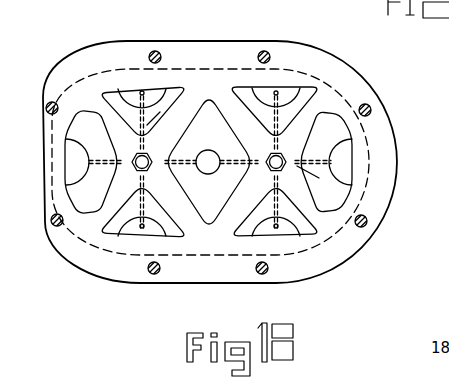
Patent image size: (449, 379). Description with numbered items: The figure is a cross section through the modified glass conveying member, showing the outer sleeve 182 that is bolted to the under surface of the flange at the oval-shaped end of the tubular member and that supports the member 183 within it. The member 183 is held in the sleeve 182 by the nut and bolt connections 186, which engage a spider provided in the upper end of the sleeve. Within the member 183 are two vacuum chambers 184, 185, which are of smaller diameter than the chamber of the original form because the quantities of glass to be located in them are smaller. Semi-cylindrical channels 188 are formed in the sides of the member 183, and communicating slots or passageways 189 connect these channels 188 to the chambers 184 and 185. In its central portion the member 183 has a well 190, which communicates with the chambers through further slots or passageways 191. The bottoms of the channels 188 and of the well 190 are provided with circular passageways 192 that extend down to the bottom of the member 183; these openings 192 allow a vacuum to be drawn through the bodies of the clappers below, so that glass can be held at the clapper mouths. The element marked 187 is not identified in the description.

The outer sleeve 182 is at (236, 272).
The member 183 is at (327, 130).
The vacuum chamber 184 is at (357, 197).
The vacuum chamber 185 is at (138, 138).
The nut and bolt connections 186 is at (140, 178).
The web rib 187 is at (303, 128).
The semi-cylindrical channels 188 is at (158, 92).
The slots or passageways 189 is at (205, 53).
The well 190 is at (208, 174).
The slots or passageways 191 is at (208, 150).
The circular passageways 192 is at (143, 90).